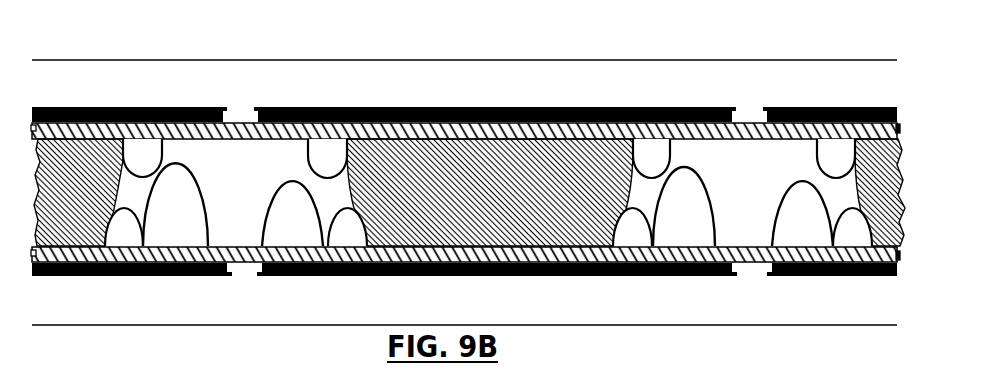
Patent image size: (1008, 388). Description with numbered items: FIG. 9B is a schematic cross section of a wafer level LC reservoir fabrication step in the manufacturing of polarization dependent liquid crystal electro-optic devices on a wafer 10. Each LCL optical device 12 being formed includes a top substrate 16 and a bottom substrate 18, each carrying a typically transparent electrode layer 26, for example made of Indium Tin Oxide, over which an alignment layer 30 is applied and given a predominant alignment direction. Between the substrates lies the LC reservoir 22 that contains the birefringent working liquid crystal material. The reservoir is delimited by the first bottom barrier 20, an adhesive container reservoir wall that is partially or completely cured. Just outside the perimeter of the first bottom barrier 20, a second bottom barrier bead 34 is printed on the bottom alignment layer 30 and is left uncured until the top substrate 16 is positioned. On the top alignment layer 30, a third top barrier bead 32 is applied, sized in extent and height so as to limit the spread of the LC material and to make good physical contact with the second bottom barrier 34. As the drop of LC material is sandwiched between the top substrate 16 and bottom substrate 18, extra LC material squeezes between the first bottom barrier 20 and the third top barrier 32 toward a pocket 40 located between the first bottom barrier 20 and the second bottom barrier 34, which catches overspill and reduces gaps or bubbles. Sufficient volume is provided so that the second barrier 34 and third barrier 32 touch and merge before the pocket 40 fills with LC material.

The wafer 10 is at (468, 192).
The LCL optical device 12 is at (713, 52).
The top substrate 16 is at (852, 95).
The bottom substrate 18 is at (852, 312).
The first bottom barrier 20 is at (642, 209).
The LC reservoir 22 is at (582, 219).
The electrode layer 26 is at (103, 107).
The alignment layer 30 is at (240, 247).
The third top barrier bead 32 is at (673, 157).
The second bottom barrier bead 34 is at (198, 198).
The pocket 40 is at (330, 200).